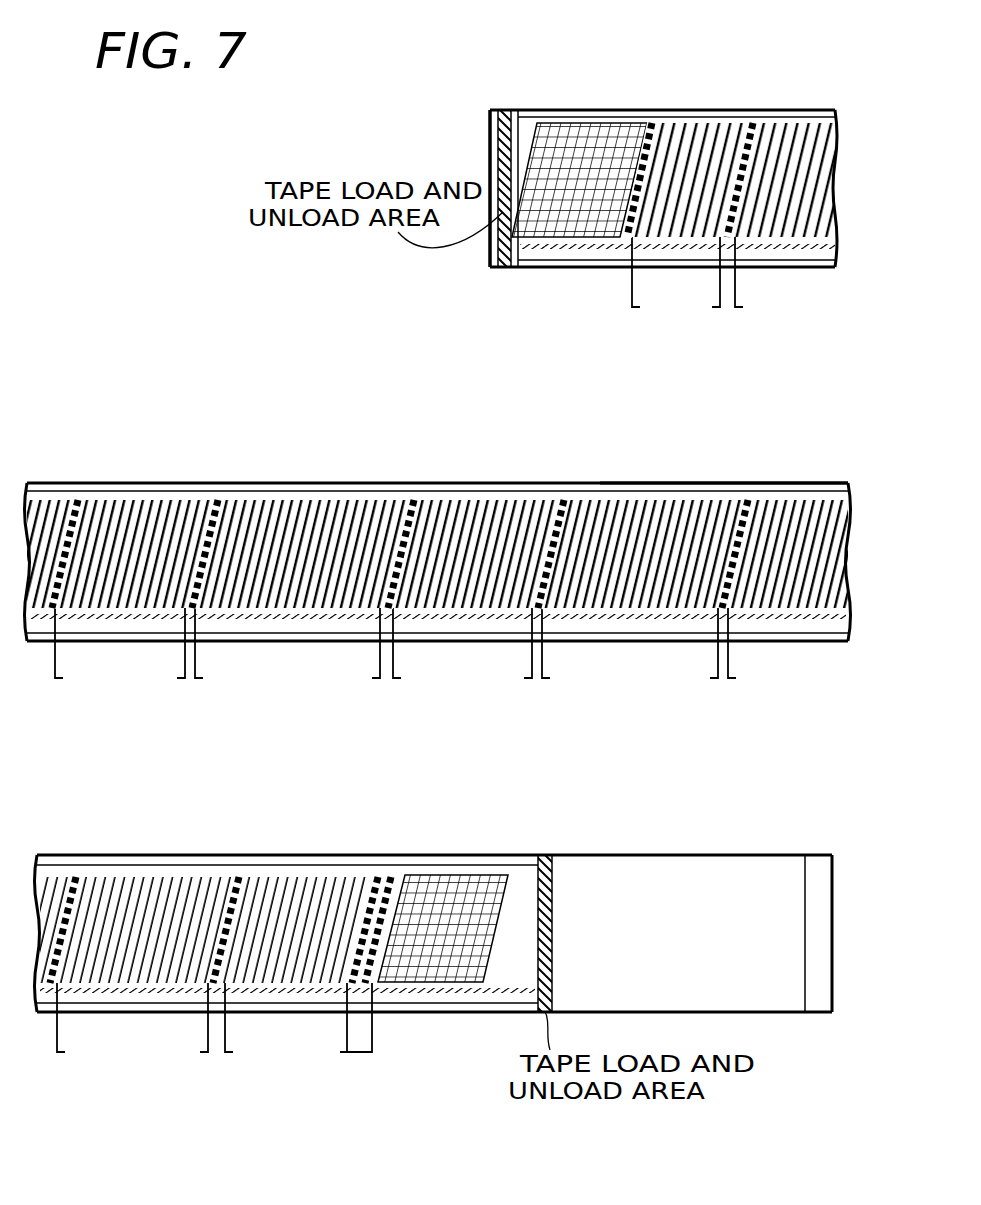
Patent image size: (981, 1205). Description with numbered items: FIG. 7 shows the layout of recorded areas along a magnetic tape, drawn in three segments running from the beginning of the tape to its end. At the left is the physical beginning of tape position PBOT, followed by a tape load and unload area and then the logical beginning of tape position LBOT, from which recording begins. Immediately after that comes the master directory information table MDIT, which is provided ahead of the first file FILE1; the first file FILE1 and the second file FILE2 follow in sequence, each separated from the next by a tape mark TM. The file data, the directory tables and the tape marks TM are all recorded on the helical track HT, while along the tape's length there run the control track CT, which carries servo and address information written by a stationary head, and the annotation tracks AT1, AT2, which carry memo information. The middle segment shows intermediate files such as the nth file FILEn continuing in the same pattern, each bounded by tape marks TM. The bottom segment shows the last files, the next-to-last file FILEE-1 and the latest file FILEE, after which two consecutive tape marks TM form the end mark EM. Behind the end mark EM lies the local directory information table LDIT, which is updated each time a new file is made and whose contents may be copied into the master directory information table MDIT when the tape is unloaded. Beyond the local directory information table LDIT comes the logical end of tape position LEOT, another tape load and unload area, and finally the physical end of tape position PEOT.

The physical beginning of tape position PBOT is at (490, 113).
The logical beginning of tape position LBOT is at (519, 268).
The master directory information table MDIT is at (560, 123).
The tape mark TM is at (652, 123).
The file 1 FILE1 is at (676, 277).
The file 2 FILE2 is at (782, 277).
The helical track HT is at (48, 483).
The annotation track AT1 is at (56, 618).
The annotation track AT2 is at (803, 483).
The control track CT is at (338, 618).
The file n FILEn is at (120, 650).
The local directory information table LDIT is at (435, 877).
The logical end of tape position LEOT is at (805, 852).
The physical end of tape position PEOT is at (832, 1012).
The file (E-1) FILEE-1 is at (132, 1023).
The file E FILEE is at (286, 1023).
The end mark EM is at (362, 1053).